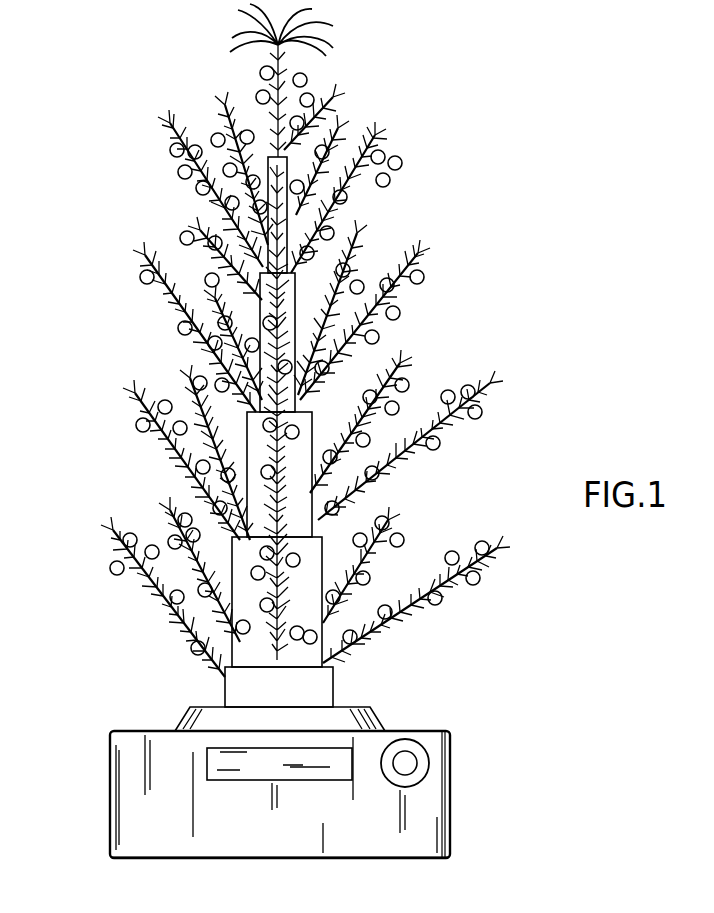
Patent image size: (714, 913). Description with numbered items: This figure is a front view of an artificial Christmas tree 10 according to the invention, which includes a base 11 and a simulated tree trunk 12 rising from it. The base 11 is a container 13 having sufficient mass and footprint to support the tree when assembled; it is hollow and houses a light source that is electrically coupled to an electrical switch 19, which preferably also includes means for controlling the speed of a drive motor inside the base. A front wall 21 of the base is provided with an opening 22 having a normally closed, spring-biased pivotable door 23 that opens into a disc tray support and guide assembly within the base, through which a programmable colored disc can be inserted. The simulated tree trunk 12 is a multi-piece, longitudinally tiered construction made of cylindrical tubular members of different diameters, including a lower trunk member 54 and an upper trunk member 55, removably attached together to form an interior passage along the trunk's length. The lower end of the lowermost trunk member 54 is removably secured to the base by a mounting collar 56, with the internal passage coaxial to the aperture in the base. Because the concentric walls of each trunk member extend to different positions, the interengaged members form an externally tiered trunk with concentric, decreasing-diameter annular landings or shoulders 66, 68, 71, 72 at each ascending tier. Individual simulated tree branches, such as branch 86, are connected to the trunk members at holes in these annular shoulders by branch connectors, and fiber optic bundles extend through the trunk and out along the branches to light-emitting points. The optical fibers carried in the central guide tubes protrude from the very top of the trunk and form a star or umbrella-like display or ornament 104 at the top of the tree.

The artificial Christmas tree 10 is at (493, 152).
The star or umbrella-like display or ornament 104 is at (334, 14).
The shoulder or tier position 66 is at (263, 233).
The upper trunk member 55 is at (307, 273).
The simulated tree trunk 12 is at (323, 410).
The lower trunk member 54 is at (330, 553).
The mounting collar 56 is at (385, 728).
The base 11 is at (457, 740).
The container 13 is at (451, 823).
The electrical switch 19 is at (418, 767).
The spring biased pivotable door 23 is at (213, 758).
The opening 22 is at (218, 768).
The front wall 21 is at (387, 833).
The annular shoulder or tier 68 is at (190, 380).
The annular ring shaped landing or shoulder 71 is at (200, 500).
The annular ring shaped landing or shoulder 72 is at (198, 640).
The simulated tree branch 86 is at (482, 399).